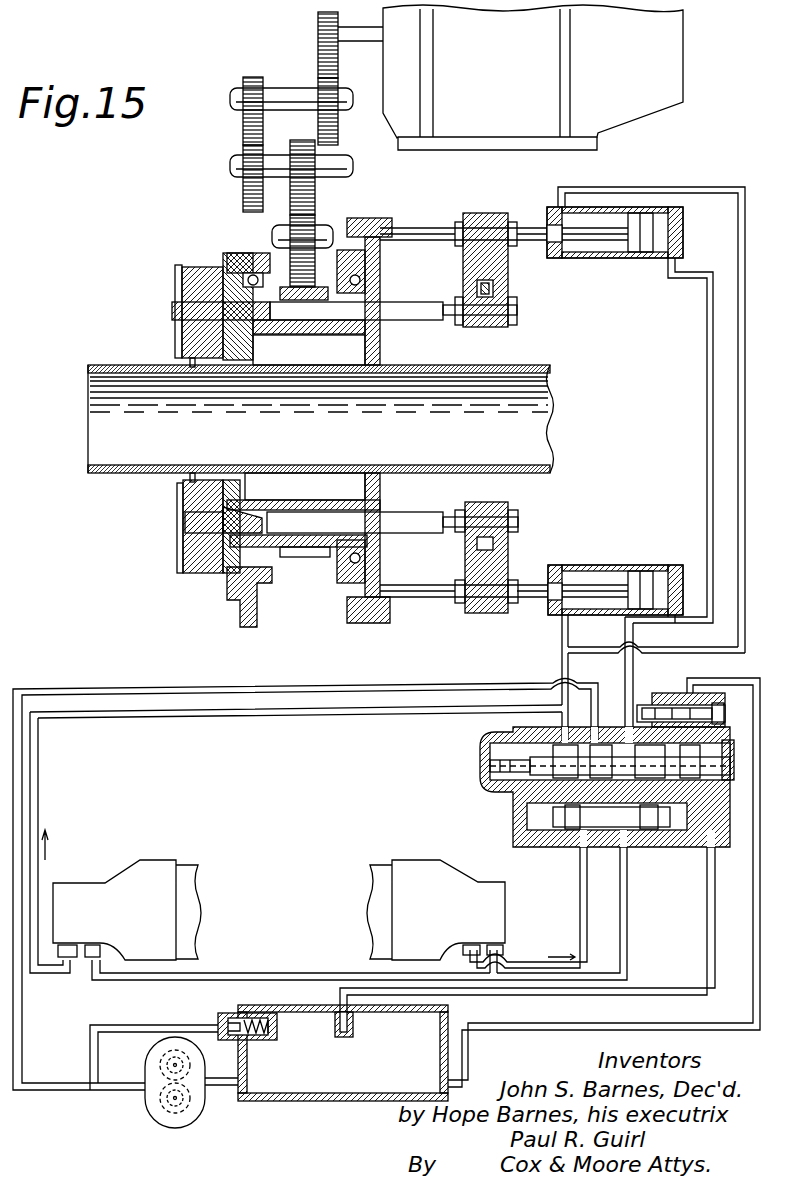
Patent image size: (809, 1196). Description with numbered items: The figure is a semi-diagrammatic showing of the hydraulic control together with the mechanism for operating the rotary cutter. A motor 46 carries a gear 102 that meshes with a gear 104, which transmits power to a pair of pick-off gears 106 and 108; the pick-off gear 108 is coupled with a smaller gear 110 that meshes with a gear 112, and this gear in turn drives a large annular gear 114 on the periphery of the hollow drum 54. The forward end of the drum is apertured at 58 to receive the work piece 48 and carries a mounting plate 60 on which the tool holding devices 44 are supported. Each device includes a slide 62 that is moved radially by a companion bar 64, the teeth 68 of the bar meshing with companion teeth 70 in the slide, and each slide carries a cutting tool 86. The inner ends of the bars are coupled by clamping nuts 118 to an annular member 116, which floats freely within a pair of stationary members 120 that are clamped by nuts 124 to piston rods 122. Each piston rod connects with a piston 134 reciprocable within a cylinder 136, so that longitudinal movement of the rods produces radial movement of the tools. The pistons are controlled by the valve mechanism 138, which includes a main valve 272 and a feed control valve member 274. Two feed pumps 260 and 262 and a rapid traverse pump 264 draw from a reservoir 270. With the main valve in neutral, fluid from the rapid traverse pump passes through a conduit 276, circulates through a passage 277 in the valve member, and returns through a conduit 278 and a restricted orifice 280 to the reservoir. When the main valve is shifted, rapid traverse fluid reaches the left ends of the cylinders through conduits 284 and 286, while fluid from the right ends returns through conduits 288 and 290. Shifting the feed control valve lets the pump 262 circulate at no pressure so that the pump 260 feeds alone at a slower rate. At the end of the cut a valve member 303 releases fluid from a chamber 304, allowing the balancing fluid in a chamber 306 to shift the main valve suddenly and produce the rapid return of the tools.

The tool holding device 44 is at (167, 297).
The motor 46 is at (515, 59).
The work piece 48 is at (95, 368).
The drum 54 is at (337, 548).
The aperture 58 is at (255, 470).
The mounting plate 60 is at (252, 345).
The slide 62 is at (205, 266).
The bar 64 is at (412, 320).
The teeth 68 is at (300, 335).
The companion teeth 70 is at (180, 333).
The cutting tool 86 is at (190, 360).
The gear 102 is at (318, 18).
The gear 104 is at (332, 128).
The pick-off gear 106 is at (257, 82).
The pick-off gear 108 is at (243, 140).
The gear 110 is at (307, 170).
The gear 112 is at (295, 207).
The annular gear 114 is at (307, 558).
The annular member 116 is at (508, 503).
The clamping nut 118 is at (518, 520).
The stationary member 120 is at (463, 275).
The piston rod 122 is at (418, 232).
The clamping nut 124 is at (513, 222).
The piston 134 is at (643, 218).
The cylinder 136 is at (618, 258).
The valve mechanism 138 is at (510, 808).
The feed pump 260 is at (122, 888).
The feed pump 262 is at (408, 878).
The rapid traverse pump 264 is at (152, 1112).
The reservoir 270 is at (343, 1053).
The main valve 272 is at (557, 748).
The feed control valve member 274 is at (663, 822).
The conduit 276 is at (22, 1015).
The passage 277 is at (607, 848).
The return conduit 278 is at (708, 915).
The restricted orifice 280 is at (336, 1013).
The conduit 284 is at (562, 636).
The conduit 286 is at (740, 540).
The conduit 288 is at (707, 447).
The conduit 290 is at (633, 668).
The valve member 303 is at (640, 714).
The chamber 304 is at (718, 782).
The chamber 306 is at (488, 767).